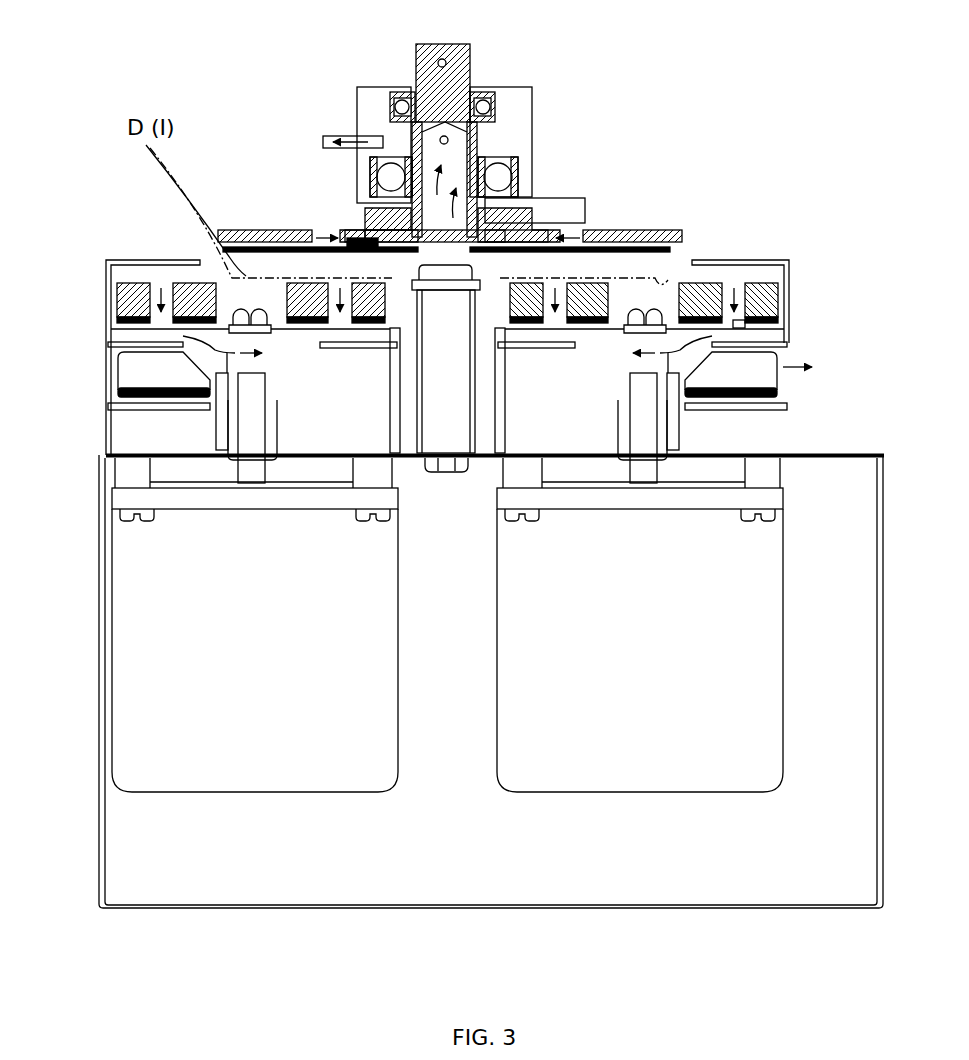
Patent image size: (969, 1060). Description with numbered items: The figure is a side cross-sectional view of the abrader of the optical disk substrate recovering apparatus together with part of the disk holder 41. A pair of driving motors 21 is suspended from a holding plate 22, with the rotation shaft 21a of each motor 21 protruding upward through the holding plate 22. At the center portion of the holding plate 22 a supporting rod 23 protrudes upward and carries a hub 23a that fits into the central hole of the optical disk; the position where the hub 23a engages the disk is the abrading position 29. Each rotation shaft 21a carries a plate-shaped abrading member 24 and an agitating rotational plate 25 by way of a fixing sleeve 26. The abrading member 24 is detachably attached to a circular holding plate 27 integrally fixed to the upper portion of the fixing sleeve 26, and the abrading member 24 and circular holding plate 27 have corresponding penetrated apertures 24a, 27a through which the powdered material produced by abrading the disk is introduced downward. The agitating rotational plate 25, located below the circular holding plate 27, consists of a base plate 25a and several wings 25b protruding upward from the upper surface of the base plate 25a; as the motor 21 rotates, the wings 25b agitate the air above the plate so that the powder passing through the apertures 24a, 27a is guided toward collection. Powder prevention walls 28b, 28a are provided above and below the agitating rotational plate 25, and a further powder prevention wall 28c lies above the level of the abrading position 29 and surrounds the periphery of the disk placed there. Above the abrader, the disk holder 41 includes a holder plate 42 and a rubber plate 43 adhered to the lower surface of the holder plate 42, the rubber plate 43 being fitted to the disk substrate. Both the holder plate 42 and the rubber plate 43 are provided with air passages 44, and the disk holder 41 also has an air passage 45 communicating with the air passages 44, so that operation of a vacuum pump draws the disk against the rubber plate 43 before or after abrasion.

The driving motor 21 is at (258, 688).
The rotation shaft 21a is at (250, 463).
The holding plate 22 is at (410, 458).
The supporting rod 23 is at (450, 425).
The hub 23a is at (443, 279).
The abrading member 24 is at (130, 302).
The penetrated aperture 24a is at (732, 287).
The agitating rotational plate 25 is at (403, 438).
The base plate 25a is at (152, 395).
The wing 25b is at (137, 373).
The fixing sleeve 26 is at (238, 363).
The circular holding plate 27 is at (215, 327).
The penetrated aperture 27a is at (745, 326).
The powder prevention wall 28a is at (120, 407).
The powder prevention wall 28b is at (125, 343).
The powder prevention wall 28c is at (135, 262).
The abrading position 29 is at (670, 272).
The disk holder 41 is at (567, 203).
The holder plate 42 is at (250, 230).
The rubber plate 43 is at (300, 232).
The air passage 44 is at (587, 228).
The air passage 45 is at (400, 138).